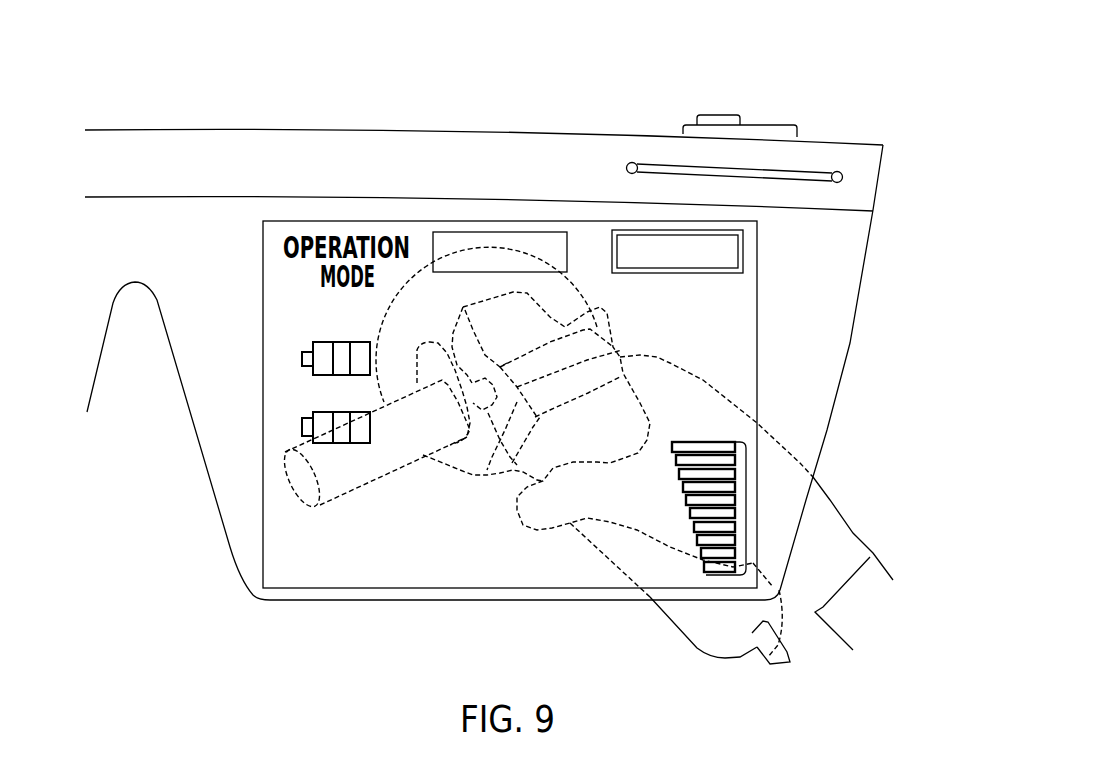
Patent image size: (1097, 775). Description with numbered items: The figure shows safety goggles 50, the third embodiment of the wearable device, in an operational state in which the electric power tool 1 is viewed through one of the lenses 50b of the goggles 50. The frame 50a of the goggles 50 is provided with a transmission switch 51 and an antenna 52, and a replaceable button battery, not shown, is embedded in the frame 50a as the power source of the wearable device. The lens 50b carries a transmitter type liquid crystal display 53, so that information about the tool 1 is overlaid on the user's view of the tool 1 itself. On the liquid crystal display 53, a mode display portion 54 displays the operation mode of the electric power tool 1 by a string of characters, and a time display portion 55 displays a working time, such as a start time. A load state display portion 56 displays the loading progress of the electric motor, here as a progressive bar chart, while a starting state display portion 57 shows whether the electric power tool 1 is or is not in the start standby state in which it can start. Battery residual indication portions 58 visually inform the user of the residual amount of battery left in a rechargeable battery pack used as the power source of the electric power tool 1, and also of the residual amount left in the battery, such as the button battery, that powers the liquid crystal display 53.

The electric power tool 1 is at (668, 636).
The safety goggles 50 is at (300, 118).
The frame 50a is at (540, 157).
The lens 50b is at (813, 447).
The transmission switch 51 is at (713, 113).
The antenna 52 is at (659, 165).
The transmitter type liquid crystal display 53 is at (713, 322).
The mode display portion 54 is at (478, 242).
The time display portion 55 is at (732, 232).
The load state display portion 56 is at (745, 508).
The starting state display portion 57 is at (495, 575).
The battery residual indication portions 58 is at (303, 427).